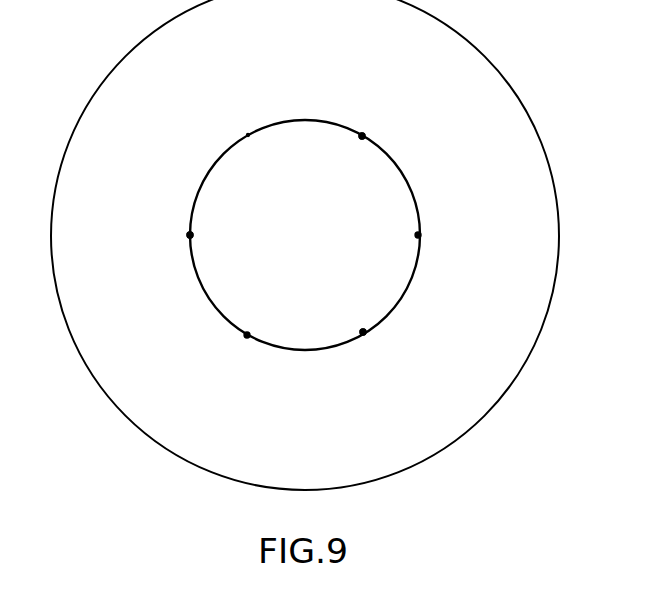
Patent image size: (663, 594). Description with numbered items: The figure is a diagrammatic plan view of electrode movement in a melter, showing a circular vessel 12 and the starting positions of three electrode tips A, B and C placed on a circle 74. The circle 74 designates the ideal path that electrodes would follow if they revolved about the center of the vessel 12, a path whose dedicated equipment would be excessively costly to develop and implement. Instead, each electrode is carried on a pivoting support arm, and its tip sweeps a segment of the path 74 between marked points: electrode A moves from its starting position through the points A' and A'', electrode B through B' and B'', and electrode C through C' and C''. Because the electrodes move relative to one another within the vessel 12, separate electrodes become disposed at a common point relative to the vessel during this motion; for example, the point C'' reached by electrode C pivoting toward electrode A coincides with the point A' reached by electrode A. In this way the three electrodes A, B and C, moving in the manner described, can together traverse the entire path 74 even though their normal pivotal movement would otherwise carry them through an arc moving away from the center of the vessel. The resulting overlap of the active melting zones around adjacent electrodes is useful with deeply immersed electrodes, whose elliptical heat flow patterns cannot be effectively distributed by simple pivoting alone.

The circular vessel 12 is at (545, 153).
The circle 74 is at (212, 167).
The electrode tip B is at (249, 104).
The point B' is at (375, 105).
The point A'' is at (399, 120).
The electrode tip A is at (438, 218).
The point A' is at (400, 328).
The point C'' is at (379, 362).
The electrode tip C is at (226, 363).
The point B'' is at (156, 225).
The point C' is at (163, 269).